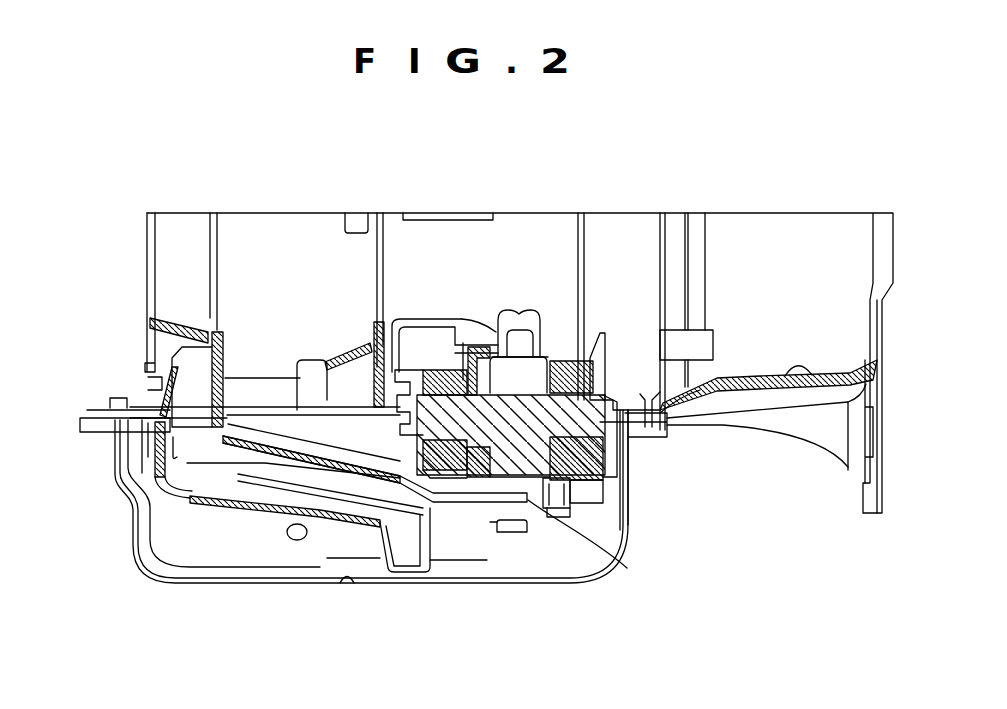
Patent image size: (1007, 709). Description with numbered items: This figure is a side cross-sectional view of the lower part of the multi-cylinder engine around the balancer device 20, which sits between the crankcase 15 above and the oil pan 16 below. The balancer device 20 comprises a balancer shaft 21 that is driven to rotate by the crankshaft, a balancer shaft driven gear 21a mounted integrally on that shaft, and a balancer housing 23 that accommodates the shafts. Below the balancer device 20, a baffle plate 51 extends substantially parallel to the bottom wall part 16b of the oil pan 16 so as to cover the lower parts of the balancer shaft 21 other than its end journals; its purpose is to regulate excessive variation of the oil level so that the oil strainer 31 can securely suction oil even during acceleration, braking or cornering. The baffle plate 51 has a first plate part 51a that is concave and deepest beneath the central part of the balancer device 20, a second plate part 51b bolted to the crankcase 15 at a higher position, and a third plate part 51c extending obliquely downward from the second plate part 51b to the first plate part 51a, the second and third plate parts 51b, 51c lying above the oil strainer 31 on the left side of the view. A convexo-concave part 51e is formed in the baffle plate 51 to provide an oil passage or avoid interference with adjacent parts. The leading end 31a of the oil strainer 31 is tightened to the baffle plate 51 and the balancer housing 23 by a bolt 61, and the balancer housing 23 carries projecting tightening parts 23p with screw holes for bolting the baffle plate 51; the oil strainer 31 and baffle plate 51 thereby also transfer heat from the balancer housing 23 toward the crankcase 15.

The crankcase 15 is at (147, 316).
The oil pan 16 is at (207, 587).
The bottom wall part 16b is at (348, 578).
The balancer device 20 is at (560, 342).
The balancer shaft 21 is at (610, 400).
The balancer shaft driven gear 21a is at (490, 327).
The balancer housing 23 is at (600, 447).
The projecting tightening part 23p is at (540, 500).
The oil strainer 31 is at (345, 523).
The leading end 31a is at (460, 560).
The baffle plate 51 is at (613, 508).
The first plate part 51a is at (585, 492).
The second plate part 51b is at (187, 463).
The third plate part 51c is at (367, 365).
The convexo-concave part 51e is at (608, 547).
The bolt 61 is at (517, 532).